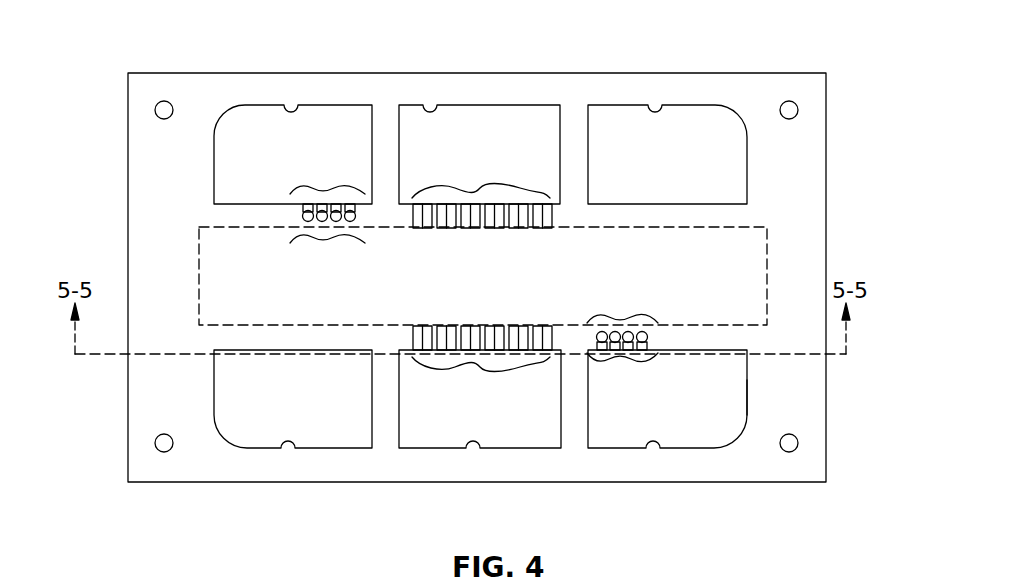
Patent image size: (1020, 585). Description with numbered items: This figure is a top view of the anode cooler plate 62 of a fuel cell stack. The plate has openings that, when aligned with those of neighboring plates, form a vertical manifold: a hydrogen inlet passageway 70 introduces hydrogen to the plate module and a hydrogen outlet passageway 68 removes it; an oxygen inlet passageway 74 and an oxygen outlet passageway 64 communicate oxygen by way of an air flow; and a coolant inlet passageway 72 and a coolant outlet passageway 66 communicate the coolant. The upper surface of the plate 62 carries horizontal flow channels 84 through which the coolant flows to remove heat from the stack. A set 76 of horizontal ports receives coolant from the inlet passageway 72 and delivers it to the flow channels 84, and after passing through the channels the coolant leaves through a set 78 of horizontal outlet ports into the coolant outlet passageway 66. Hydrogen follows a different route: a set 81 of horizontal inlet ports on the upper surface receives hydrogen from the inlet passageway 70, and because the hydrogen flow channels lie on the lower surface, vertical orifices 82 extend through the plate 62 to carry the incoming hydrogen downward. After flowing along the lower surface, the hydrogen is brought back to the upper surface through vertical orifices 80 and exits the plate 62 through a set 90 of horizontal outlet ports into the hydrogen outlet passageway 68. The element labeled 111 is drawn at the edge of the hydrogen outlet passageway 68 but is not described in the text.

The anode cooler plate 62 is at (826, 157).
The oxygen outlet passageway 64 is at (288, 440).
The coolant outlet passageway 66 is at (473, 448).
The hydrogen outlet passageway 68 is at (653, 448).
The hydrogen inlet passageway 70 is at (295, 115).
The coolant inlet passageway 72 is at (437, 115).
The oxygen inlet passageway 74 is at (662, 115).
The set of horizontal ports 76 is at (479, 187).
The set of horizontal outlet ports 78 is at (480, 368).
The vertical orifices 80 is at (620, 314).
The set of horizontal inlet ports 81 is at (325, 186).
The vertical orifices 82 is at (325, 238).
The horizontal flow channels 84 is at (768, 247).
The set of horizontal outlet ports 90 is at (627, 357).
The detection chamber 111 is at (748, 398).